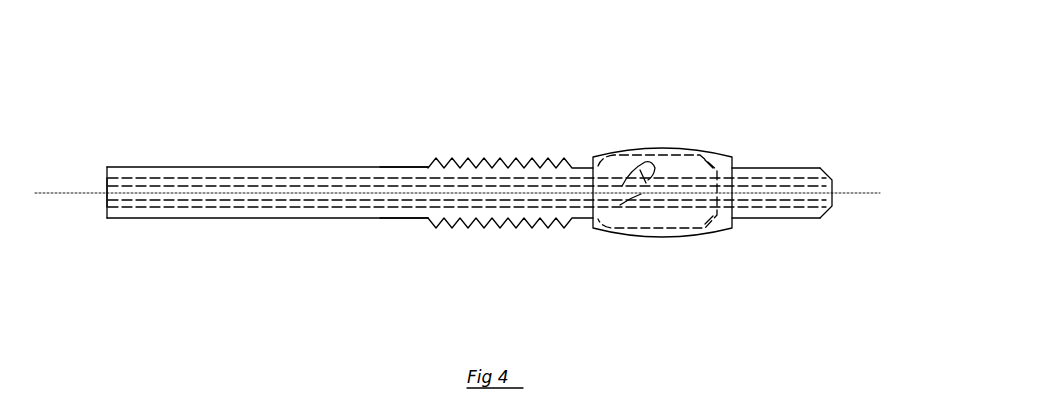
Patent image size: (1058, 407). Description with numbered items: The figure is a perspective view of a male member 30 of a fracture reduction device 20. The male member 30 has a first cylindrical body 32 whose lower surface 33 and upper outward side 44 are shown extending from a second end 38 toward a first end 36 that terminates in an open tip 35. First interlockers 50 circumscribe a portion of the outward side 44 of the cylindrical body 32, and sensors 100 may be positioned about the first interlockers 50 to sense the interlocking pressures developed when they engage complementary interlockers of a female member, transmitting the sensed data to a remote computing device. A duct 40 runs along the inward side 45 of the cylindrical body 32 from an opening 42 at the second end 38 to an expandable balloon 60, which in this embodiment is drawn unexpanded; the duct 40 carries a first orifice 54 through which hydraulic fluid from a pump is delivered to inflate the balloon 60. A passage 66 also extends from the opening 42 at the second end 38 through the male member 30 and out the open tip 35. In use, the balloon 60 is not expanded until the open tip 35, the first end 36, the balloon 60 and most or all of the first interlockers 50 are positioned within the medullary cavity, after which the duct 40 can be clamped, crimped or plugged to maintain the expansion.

The fracture reduction device 20 is at (675, 65).
The male member 30 is at (327, 147).
The first cylindrical body 32 is at (228, 167).
The lower surface of shank 33 is at (278, 218).
The open tip 35 is at (829, 166).
The first end 36 is at (779, 167).
The second end 38 is at (107, 169).
The duct 40 is at (192, 196).
The opening 42 is at (105, 180).
The outward side 44 is at (395, 167).
The inward side 45 is at (329, 199).
The first interlockers 50 is at (466, 166).
The first orifice 54 is at (653, 164).
The expandable balloon 60 is at (662, 219).
The passage 66 is at (393, 218).
The sensors 100 is at (517, 221).